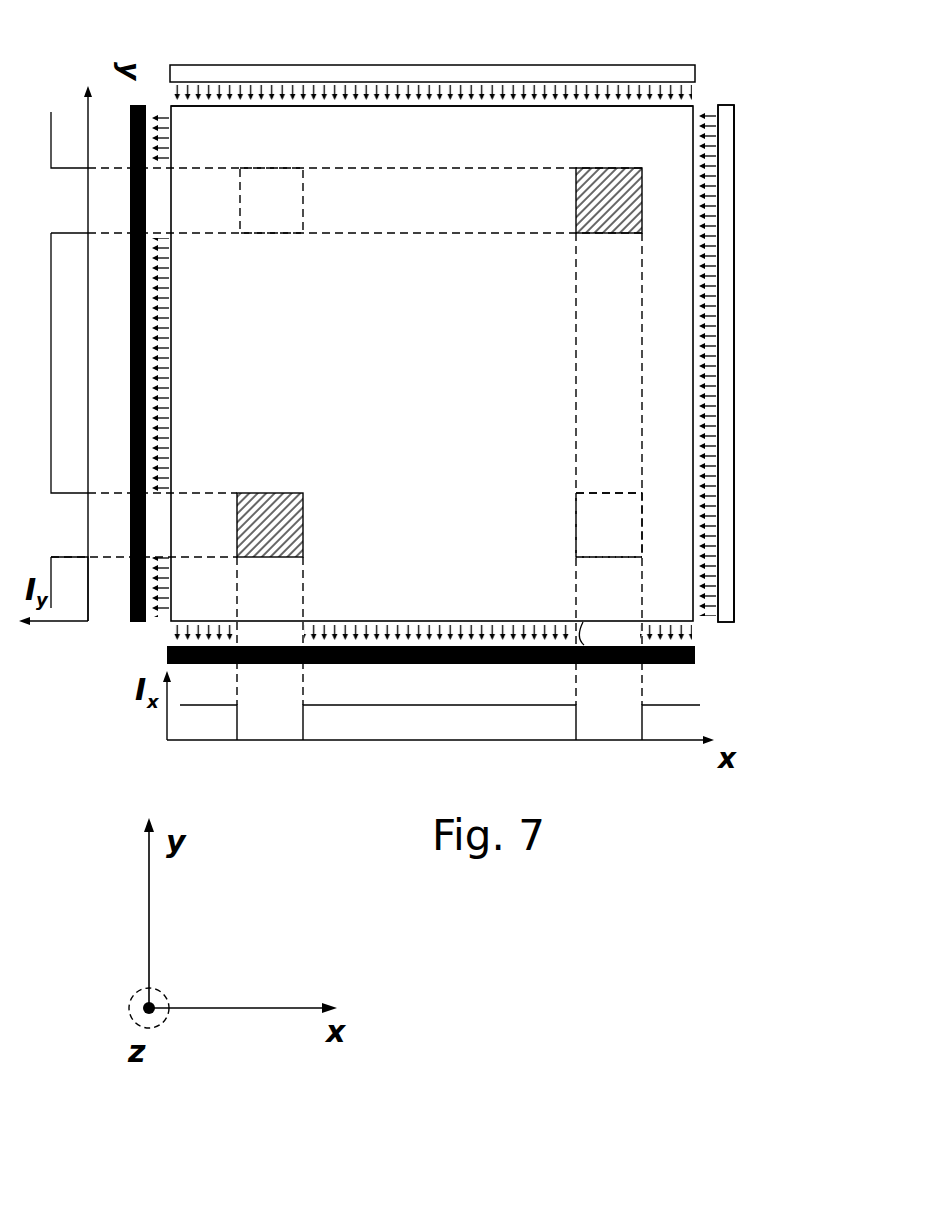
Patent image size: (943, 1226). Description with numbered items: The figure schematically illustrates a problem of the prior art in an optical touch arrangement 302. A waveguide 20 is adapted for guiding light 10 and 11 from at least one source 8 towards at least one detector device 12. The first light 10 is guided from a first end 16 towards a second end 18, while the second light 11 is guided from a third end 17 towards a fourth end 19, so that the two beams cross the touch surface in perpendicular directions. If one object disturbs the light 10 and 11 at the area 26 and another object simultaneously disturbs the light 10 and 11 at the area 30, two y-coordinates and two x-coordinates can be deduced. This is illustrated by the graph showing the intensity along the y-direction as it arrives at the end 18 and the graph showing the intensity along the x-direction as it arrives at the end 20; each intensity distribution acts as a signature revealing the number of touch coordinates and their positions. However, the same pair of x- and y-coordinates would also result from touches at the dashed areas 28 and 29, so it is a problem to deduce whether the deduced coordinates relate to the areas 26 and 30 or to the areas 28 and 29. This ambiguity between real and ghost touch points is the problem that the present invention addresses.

The light source 8 is at (392, 74).
The first light 10 is at (160, 118).
The second light 11 is at (482, 93).
The detector device 12 is at (130, 621).
The first end 16 is at (686, 353).
The third end 17 is at (282, 112).
The second end 18 is at (170, 333).
The fourth end 19 is at (594, 660).
The waveguide 20 is at (405, 580).
The first area 26 is at (576, 235).
The second area 28 is at (271, 200).
The third area 29 is at (609, 525).
The area 30 is at (288, 500).
The touch screen system 302 is at (763, 527).